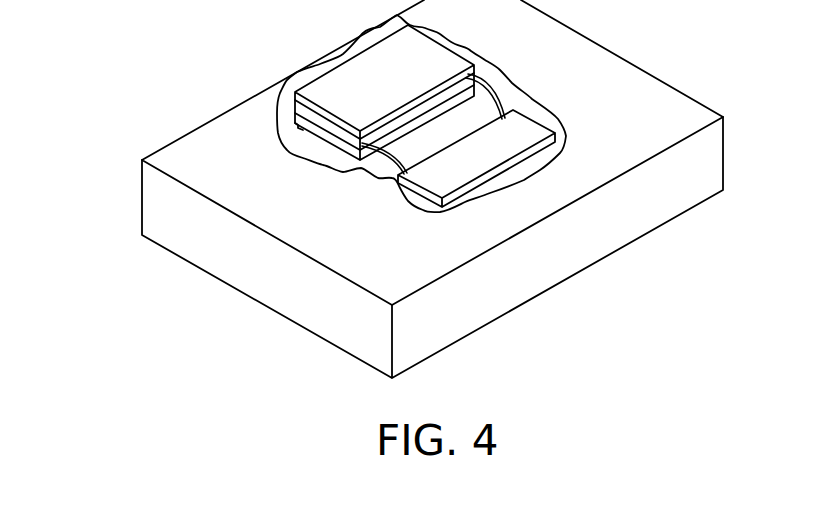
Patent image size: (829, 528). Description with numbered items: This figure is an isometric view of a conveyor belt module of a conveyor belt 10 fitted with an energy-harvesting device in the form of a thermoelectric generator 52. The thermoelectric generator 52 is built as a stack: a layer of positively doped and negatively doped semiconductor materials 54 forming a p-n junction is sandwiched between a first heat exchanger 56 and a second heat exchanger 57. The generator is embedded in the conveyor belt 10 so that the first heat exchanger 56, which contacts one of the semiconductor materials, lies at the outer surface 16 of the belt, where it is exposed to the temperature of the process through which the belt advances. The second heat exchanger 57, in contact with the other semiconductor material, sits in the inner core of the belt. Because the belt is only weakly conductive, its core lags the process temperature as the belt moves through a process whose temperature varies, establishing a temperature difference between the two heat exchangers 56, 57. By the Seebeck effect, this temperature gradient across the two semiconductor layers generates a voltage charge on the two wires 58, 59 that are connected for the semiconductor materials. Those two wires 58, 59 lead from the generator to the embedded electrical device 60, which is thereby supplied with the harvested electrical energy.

The conveyor belt 10 is at (432, 189).
The outer surface 16 is at (648, 102).
The thermoelectric generator 52 is at (367, 62).
The semiconductor materials 54 is at (298, 110).
The first heat exchanger 56 is at (297, 75).
The second heat exchanger 57 is at (298, 133).
The wire 58 is at (490, 90).
The wire 59 is at (383, 142).
The embedded electrical device 60 is at (460, 175).